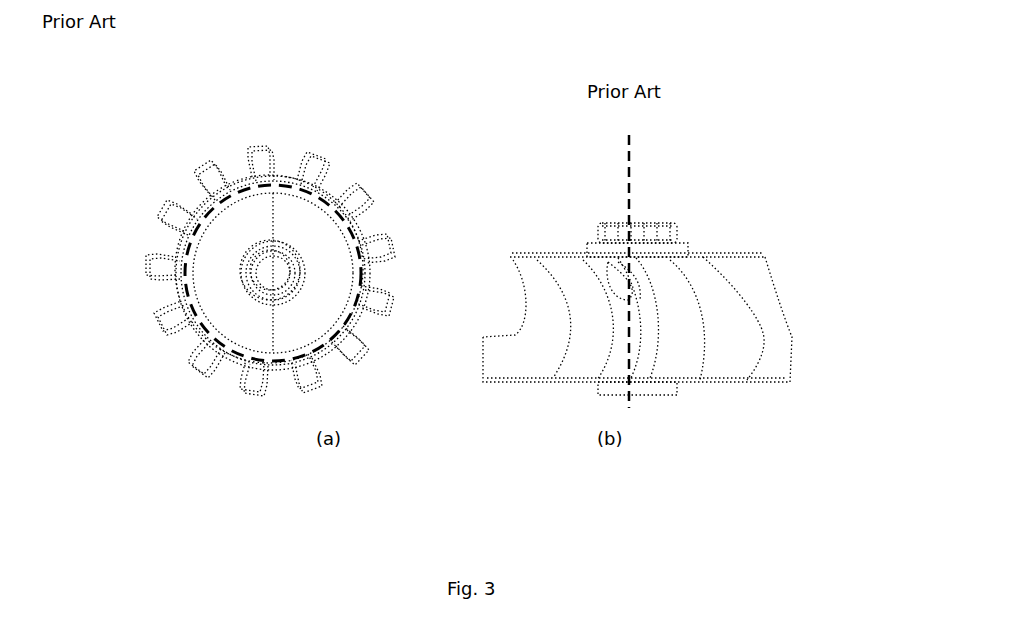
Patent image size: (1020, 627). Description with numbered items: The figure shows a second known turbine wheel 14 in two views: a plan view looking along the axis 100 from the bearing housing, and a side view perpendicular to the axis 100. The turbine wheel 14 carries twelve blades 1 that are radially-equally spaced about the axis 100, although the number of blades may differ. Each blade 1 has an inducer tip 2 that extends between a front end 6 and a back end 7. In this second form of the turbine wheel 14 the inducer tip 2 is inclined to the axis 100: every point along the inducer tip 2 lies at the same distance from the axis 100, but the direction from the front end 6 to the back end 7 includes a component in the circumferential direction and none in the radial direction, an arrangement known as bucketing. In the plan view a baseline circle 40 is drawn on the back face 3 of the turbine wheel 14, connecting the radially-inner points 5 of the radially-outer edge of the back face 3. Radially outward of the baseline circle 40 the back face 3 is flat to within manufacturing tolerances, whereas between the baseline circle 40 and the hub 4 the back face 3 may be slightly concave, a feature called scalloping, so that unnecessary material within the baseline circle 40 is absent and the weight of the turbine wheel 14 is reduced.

The turbine wheel 14 is at (399, 82).
The blade 1 is at (373, 248).
The inducer tip 2 is at (393, 255).
The back face 3 is at (292, 223).
The hub 4 is at (257, 255).
The radially-inner points 5 is at (235, 195).
The baseline circle 40 is at (315, 346).
The axis 100 is at (632, 198).
The front end 6 is at (792, 337).
The back end 7 is at (788, 382).